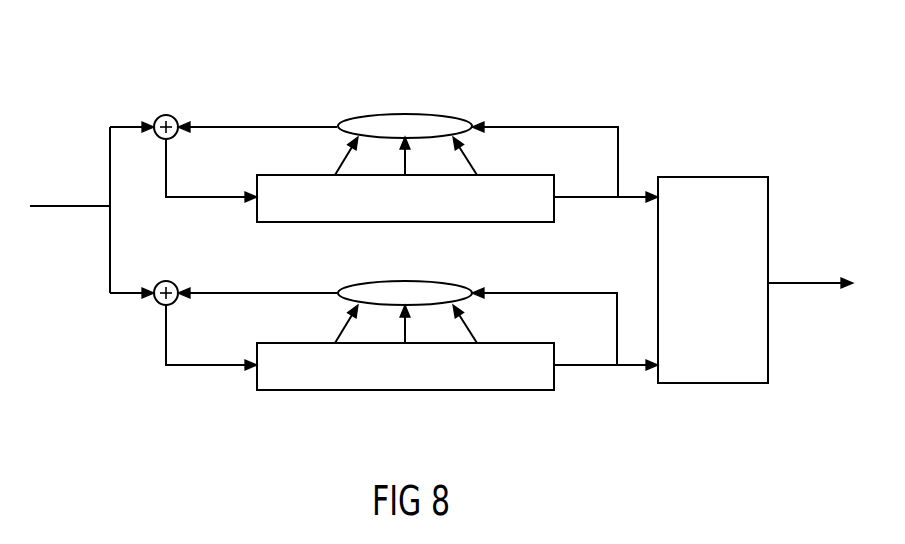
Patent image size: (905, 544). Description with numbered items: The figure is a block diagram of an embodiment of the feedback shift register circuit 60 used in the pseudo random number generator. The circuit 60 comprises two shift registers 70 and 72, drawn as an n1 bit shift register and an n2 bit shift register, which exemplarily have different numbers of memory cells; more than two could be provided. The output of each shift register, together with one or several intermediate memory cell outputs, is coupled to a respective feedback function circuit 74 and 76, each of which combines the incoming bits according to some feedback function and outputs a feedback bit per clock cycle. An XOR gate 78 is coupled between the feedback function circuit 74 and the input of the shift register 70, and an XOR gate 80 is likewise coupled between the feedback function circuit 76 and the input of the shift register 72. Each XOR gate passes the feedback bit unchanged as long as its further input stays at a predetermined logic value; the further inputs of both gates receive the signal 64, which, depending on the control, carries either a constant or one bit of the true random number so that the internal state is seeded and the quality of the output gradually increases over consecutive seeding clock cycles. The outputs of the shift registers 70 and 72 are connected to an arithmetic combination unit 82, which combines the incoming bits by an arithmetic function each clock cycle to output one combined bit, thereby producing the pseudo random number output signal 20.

The feedback shift register circuit 60 is at (613, 58).
The signal 64 is at (75, 203).
The shift register 70 is at (530, 175).
The shift register 72 is at (530, 343).
The feedback function circuit 74 is at (447, 113).
The feedback function circuit 76 is at (447, 280).
The XOR gate 78 is at (172, 114).
The XOR gate 80 is at (172, 281).
The arithmetic combination unit 82 is at (692, 177).
The pseudo random number output signal 20 is at (803, 280).